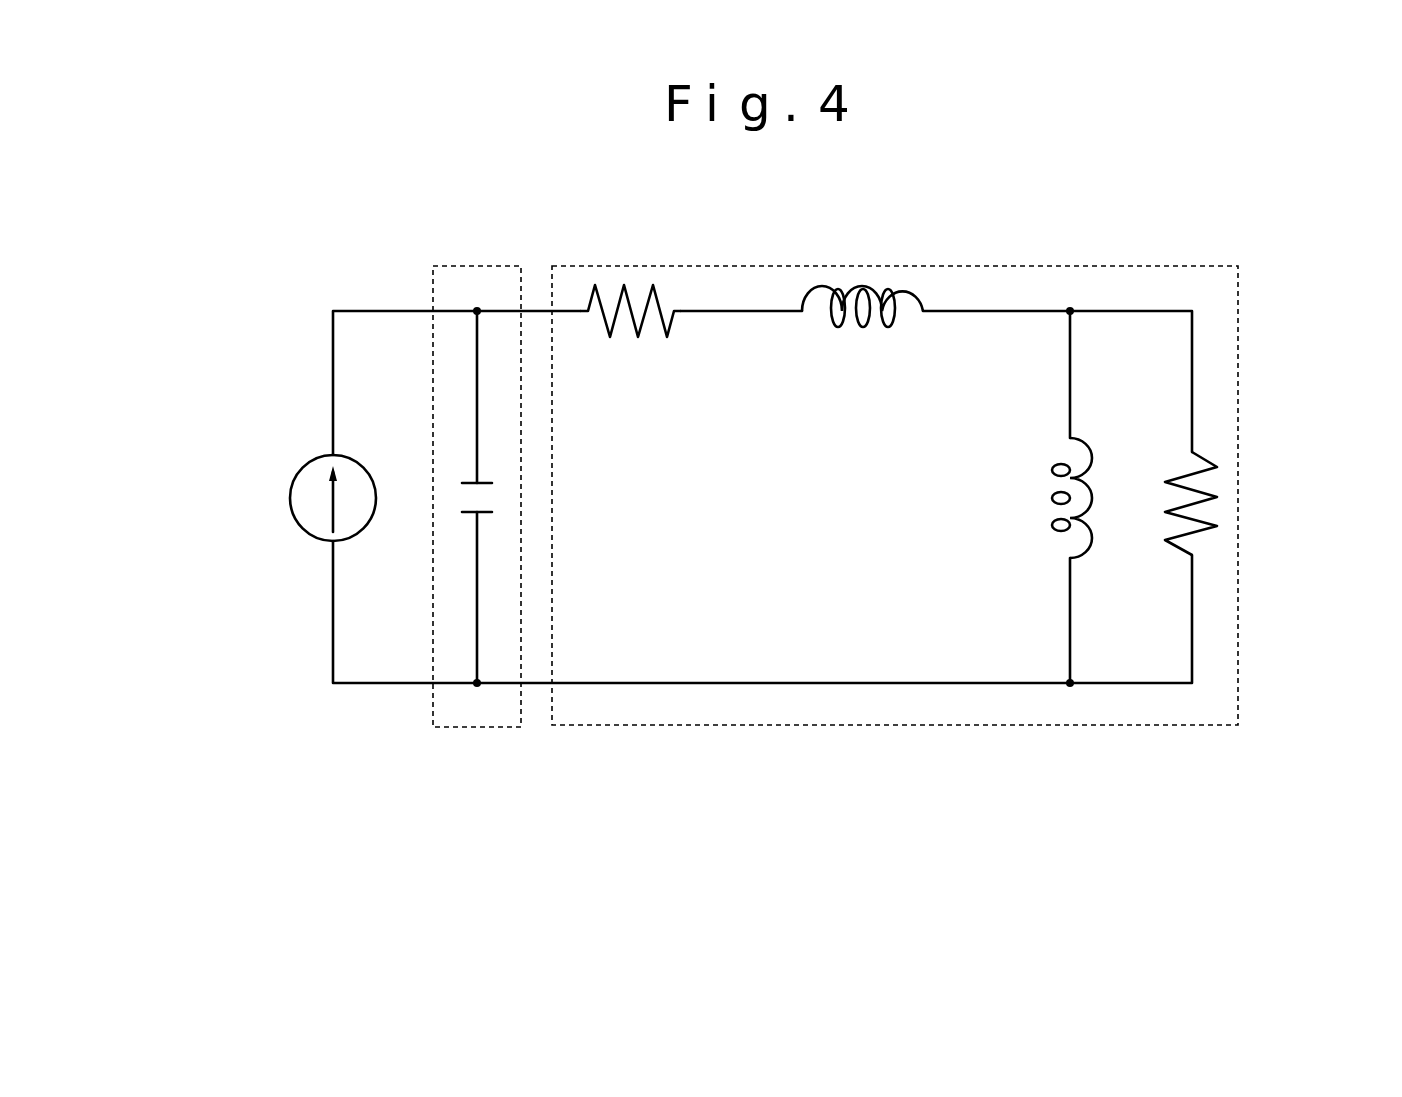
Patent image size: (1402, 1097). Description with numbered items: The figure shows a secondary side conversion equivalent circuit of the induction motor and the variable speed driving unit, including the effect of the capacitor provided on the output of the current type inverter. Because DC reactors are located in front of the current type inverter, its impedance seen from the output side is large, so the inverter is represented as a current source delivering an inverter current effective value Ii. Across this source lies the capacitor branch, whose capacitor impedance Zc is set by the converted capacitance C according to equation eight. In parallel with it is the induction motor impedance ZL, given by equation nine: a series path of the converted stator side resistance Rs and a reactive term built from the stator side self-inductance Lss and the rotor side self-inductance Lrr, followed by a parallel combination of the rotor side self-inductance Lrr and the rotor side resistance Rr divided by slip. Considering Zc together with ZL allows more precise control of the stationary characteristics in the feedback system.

The inverter current effective value Ii is at (227, 498).
The capacitance C is at (430, 504).
The capacitor impedance Zc is at (477, 512).
The induction motor impedance ZL is at (895, 535).
The stator side resistance Rs is at (624, 278).
The stator side self-inductance Lss is at (867, 280).
The rotor side self-inductance Lrr is at (970, 498).
The rotor side resistance Rr is at (1281, 503).